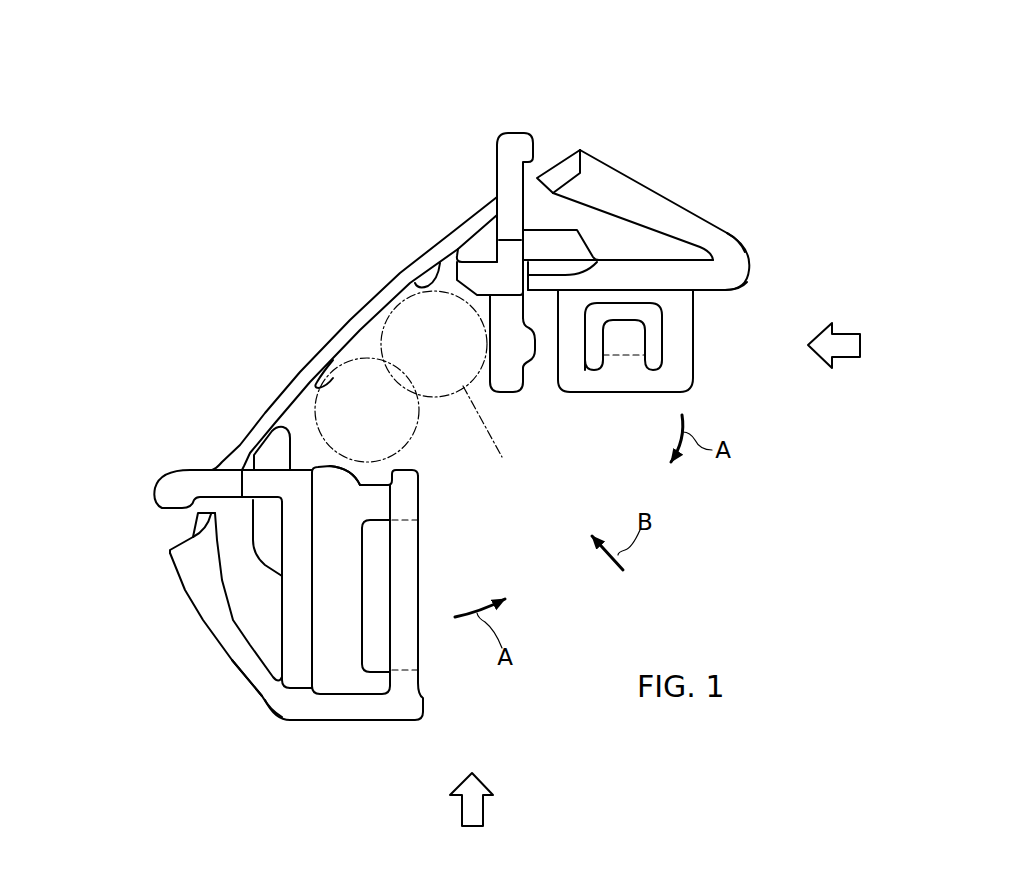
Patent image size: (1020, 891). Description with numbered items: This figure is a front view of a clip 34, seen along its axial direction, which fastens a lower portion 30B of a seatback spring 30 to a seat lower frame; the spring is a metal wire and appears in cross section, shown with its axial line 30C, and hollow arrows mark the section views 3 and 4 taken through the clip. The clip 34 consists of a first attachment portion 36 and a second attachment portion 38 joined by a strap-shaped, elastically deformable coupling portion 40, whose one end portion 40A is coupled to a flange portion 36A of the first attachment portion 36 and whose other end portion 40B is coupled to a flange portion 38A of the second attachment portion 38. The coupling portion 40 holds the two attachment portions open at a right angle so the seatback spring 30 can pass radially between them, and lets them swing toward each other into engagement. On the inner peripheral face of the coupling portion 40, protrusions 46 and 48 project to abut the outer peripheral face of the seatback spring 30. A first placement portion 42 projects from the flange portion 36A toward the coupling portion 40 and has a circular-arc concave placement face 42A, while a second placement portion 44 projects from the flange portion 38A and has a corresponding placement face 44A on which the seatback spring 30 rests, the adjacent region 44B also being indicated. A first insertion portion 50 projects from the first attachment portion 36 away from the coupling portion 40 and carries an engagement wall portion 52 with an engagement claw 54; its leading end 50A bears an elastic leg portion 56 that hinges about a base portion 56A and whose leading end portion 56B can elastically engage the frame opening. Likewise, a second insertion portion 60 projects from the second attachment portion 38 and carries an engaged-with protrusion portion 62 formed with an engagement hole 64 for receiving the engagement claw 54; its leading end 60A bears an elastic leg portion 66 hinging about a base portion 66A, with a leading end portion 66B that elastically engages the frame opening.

The section line 3-3 view arrow 3 is at (838, 357).
The section line 4-4 view arrow 4 is at (484, 807).
The seatback spring 30 is at (355, 356).
The lower portion of the seatback spring 30B is at (367, 410).
The axial line of the seatback spring 30C is at (434, 343).
The clip 34 is at (692, 80).
The first attachment portion 36 is at (552, 88).
The flange portion 36A is at (486, 148).
The second attachment portion 38 is at (142, 581).
The flange portion 38A is at (192, 468).
The coupling portion 40 is at (387, 261).
The one end portion of the coupling portion 40A is at (491, 208).
The other end portion of the coupling portion 40B is at (228, 465).
The first placement portion 42 is at (528, 394).
The placement face 42A is at (467, 383).
The second placement portion 44 is at (351, 490).
The placement face 44A is at (417, 478).
The support post recess 44B is at (420, 518).
The protrusion 46 is at (425, 287).
The protrusion 48 is at (333, 370).
The first insertion portion 50 is at (708, 298).
The leading end of the first insertion portion 50A is at (758, 283).
The engagement wall portion 52 is at (710, 380).
The engagement claw 54 is at (625, 345).
The elastic leg portion 56 is at (690, 203).
The base portion 56A is at (745, 241).
The leading end portion 56B is at (565, 160).
The second insertion portion 60 is at (280, 602).
The leading end of the second insertion portion 60A is at (293, 698).
The engaged-with protrusion portion 62 is at (398, 723).
The engagement hole 64 is at (392, 612).
The elastic leg portion 66 is at (203, 616).
The base portion 66A is at (267, 696).
The leading end portion 66B is at (190, 538).